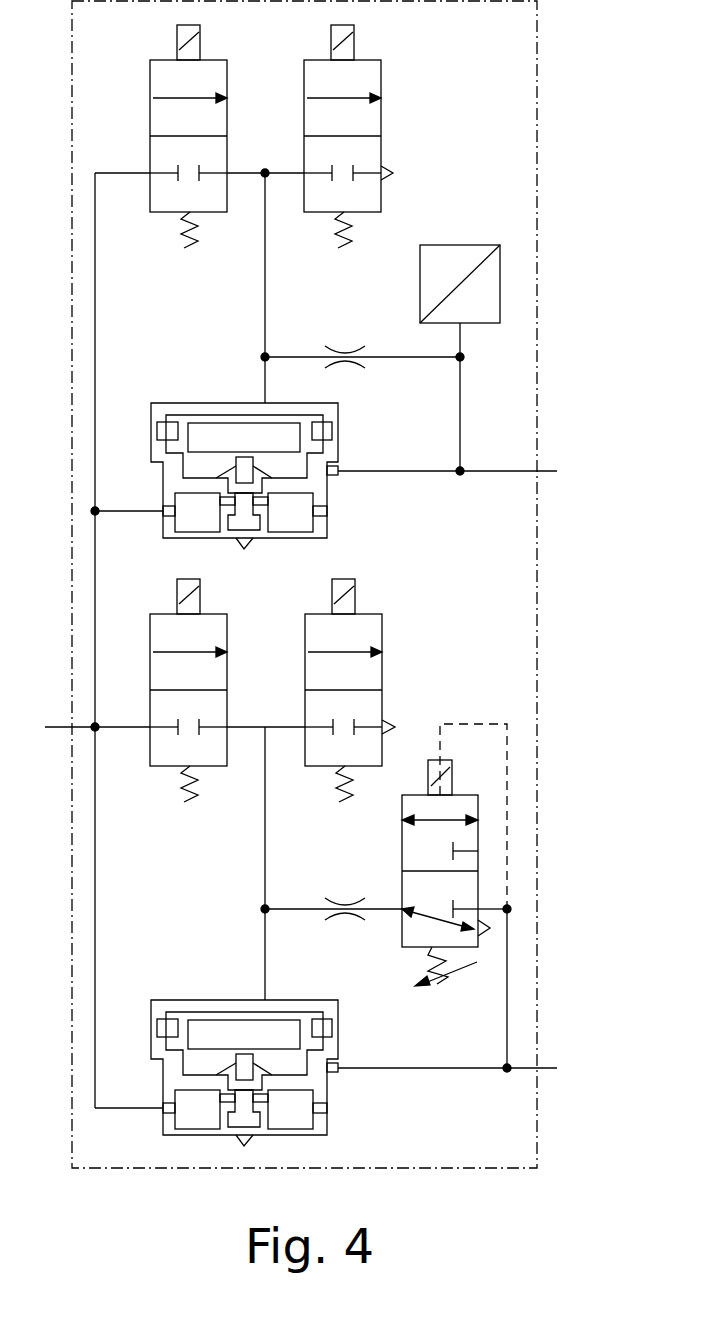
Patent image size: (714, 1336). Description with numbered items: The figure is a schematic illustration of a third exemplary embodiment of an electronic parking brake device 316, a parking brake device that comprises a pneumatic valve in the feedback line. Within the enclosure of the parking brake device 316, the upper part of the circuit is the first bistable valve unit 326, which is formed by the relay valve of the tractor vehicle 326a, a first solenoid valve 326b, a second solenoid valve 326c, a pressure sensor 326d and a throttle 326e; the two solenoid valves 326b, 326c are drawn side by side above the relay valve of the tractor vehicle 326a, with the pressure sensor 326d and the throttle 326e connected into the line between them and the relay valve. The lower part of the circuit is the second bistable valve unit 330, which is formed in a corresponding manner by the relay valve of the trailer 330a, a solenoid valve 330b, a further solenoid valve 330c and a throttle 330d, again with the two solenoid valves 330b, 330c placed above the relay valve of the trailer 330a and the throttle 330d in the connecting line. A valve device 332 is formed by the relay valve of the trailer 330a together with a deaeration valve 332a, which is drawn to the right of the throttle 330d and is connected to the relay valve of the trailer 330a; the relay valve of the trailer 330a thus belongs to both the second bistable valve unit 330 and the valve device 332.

The electronic parking brake device 316 is at (597, 41).
The first bistable valve unit 326 is at (597, 156).
The second bistable valve unit 330 is at (597, 272).
The valve device 332 is at (597, 387).
The relay valve of the tractor vehicle 326a is at (195, 403).
The first solenoid valve 326b is at (172, 70).
The second solenoid valve 326c is at (365, 78).
The pressure sensor 326d is at (458, 245).
The throttle 326e is at (345, 345).
The relay valve of the trailer 330a is at (196, 1000).
The solenoid valve 330b is at (160, 766).
The further solenoid valve 330c is at (362, 626).
The throttle 330d is at (352, 890).
The deaeration valve 332a is at (425, 940).